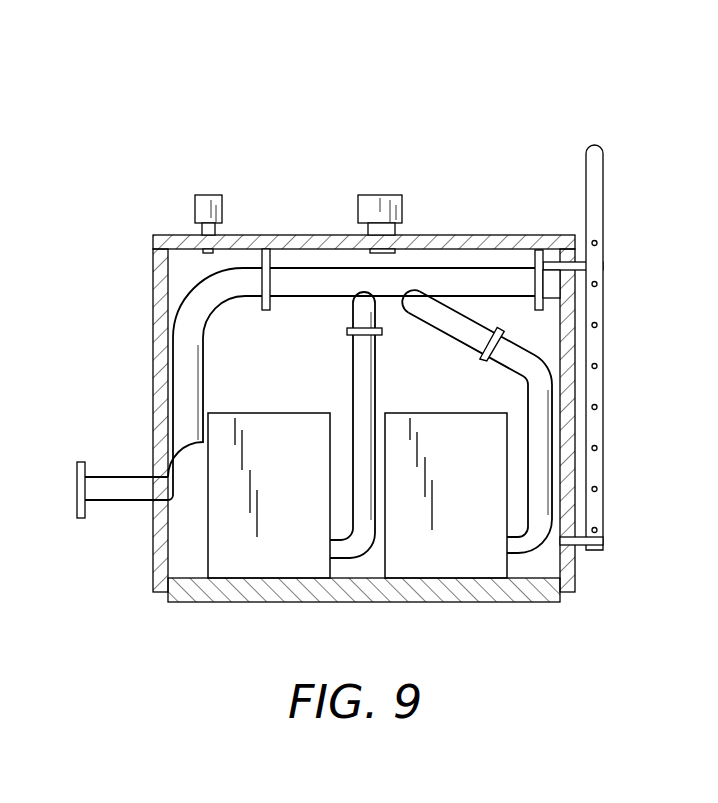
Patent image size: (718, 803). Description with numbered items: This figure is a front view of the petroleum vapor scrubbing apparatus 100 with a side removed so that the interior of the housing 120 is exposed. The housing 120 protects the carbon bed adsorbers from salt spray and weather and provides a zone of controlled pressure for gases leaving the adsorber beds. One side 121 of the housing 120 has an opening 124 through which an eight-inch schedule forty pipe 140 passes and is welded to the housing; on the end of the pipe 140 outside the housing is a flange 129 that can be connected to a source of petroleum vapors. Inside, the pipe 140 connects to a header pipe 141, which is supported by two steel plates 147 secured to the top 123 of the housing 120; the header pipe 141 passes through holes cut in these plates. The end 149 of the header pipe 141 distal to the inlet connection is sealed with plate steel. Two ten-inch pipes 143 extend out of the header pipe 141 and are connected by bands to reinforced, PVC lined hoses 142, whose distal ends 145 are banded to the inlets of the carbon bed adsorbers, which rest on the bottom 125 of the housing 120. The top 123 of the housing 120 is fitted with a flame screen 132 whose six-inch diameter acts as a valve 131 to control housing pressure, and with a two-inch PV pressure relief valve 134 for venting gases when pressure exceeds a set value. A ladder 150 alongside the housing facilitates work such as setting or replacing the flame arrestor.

The apparatus 100 is at (230, 95).
The housing 120 is at (305, 395).
The side of the housing 121 is at (155, 352).
The top of the housing 123 is at (243, 235).
The opening 124 is at (155, 501).
The bottom of the housing 125 is at (360, 604).
The flange 129 is at (78, 505).
The valve 131 is at (370, 262).
The flame screen 132 is at (392, 194).
The pressure relief valve 134 is at (201, 194).
The pipe 140 is at (130, 476).
The header pipe 141 is at (419, 280).
The hoses 142 is at (352, 402).
The pipes 143 is at (412, 306).
The distal ends of the hoses 145 is at (531, 562).
The steel plates 147 is at (262, 281).
The end of the header pipe 149 is at (567, 303).
The ladder 150 is at (604, 500).